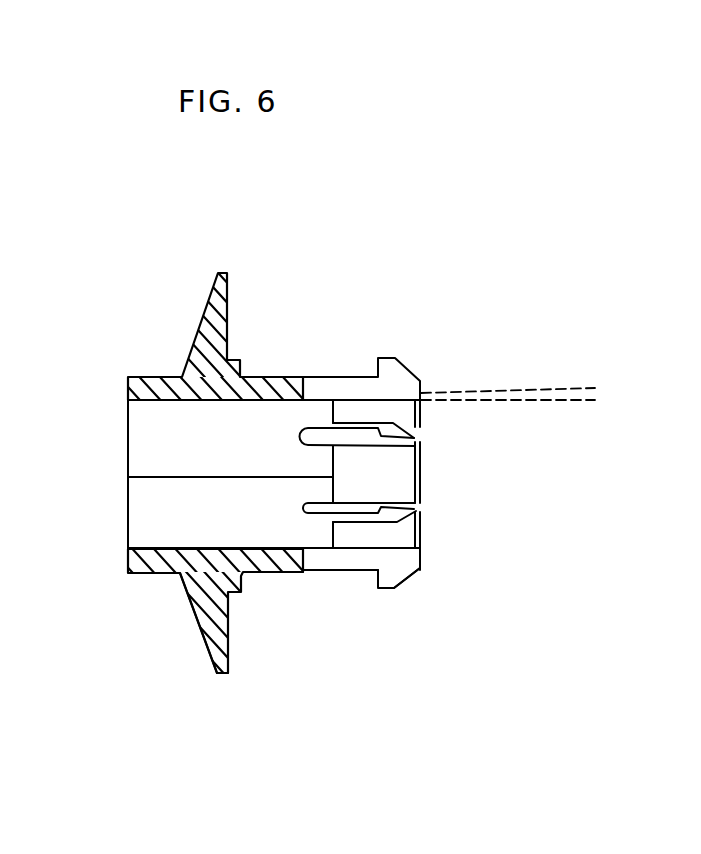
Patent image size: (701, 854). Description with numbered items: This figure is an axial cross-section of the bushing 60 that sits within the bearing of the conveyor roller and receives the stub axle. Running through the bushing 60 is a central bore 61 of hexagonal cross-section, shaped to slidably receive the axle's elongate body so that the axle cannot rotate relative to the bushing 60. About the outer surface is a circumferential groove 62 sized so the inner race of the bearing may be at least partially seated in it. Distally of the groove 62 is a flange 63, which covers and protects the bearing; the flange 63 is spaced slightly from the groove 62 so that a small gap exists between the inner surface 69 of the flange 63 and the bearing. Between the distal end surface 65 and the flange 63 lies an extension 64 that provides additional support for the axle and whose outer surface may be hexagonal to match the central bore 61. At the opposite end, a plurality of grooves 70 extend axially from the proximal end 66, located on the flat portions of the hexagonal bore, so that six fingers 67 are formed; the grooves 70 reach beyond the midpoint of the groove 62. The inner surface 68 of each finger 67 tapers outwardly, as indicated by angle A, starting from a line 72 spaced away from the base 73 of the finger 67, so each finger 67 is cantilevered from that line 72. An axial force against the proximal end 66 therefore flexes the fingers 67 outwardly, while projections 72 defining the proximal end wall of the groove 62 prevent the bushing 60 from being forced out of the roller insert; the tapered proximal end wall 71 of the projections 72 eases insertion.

The bushing 60 is at (348, 250).
The central bore 61 is at (283, 422).
The circumferential groove 62 is at (298, 574).
The flange 63 is at (212, 642).
The extension 64 is at (146, 575).
The distal end surface 65 is at (127, 388).
The proximal end 66 is at (421, 383).
The fingers 67 is at (360, 573).
The inner surface 68 is at (391, 545).
The inner surface of flange 69 is at (230, 648).
The grooves 70 is at (421, 430).
The proximal end wall 71 is at (418, 588).
The projections 72 is at (330, 538).
The base 73 is at (302, 492).
The angle A is at (597, 393).